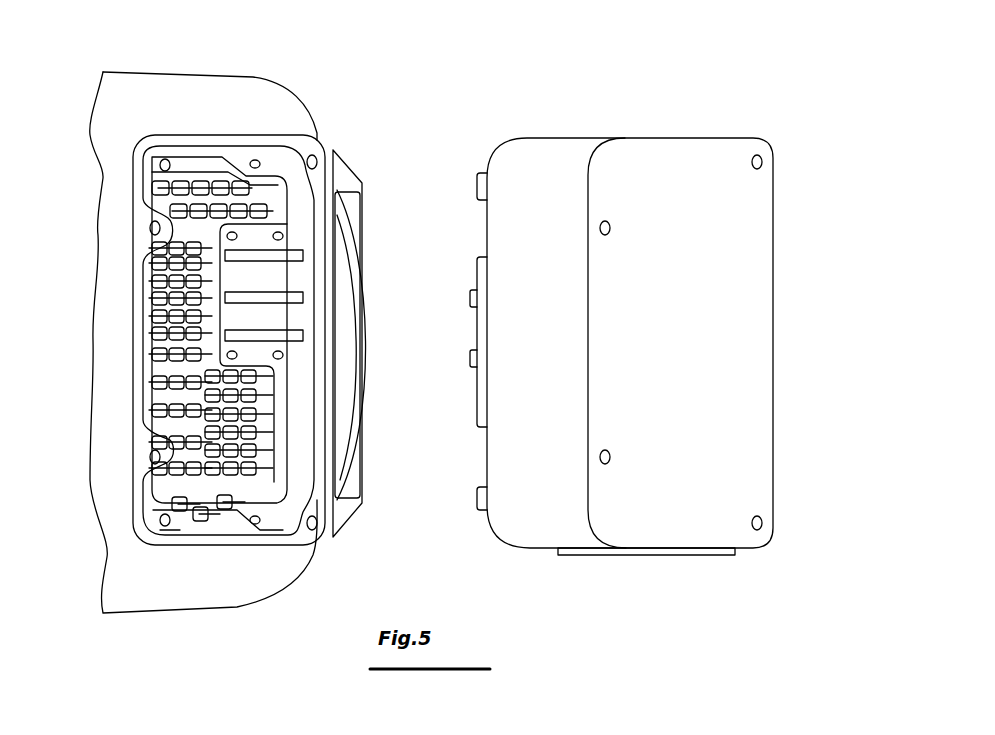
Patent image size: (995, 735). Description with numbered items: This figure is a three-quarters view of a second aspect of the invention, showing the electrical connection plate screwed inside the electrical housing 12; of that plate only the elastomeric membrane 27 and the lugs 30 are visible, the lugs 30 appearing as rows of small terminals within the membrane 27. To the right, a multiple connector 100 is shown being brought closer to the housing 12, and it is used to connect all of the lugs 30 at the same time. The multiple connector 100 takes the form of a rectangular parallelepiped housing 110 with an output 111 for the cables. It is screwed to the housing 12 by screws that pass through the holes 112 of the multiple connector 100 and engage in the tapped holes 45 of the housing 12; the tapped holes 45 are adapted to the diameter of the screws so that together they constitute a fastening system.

The electrical housing 12 is at (208, 93).
The elastomeric membrane 27 is at (160, 378).
The lugs 30 is at (183, 183).
The tapped holes 45 is at (318, 160).
The multiple connector 100 is at (652, 330).
The rectangular parallelepiped housing 110 is at (748, 258).
The output 111 is at (657, 556).
The holes 112 is at (763, 162).